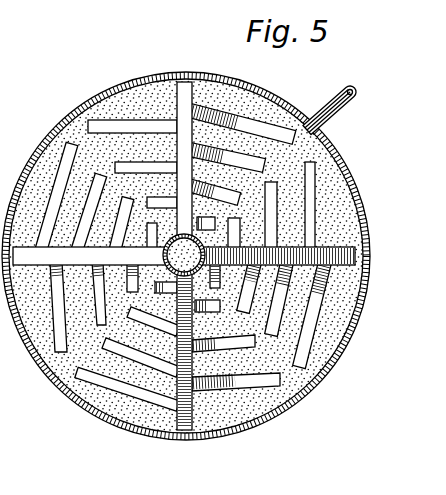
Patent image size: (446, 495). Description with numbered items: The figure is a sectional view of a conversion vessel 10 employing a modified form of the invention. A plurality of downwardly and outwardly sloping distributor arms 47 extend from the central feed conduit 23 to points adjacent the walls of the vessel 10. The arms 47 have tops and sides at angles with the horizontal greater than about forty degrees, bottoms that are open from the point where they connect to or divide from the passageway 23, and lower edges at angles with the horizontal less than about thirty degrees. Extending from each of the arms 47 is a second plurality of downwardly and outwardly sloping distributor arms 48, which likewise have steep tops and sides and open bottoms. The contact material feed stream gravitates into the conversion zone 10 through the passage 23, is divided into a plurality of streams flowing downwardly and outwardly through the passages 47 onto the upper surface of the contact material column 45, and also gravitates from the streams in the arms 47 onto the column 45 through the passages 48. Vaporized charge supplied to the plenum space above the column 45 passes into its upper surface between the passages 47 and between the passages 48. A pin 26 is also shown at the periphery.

The vessel 10 is at (320, 380).
The central feed conduit 23 is at (197, 230).
The pin 26 is at (333, 84).
The contact material column 45 is at (258, 416).
The distributor arms 47 is at (177, 88).
The second distributor arms 48 is at (337, 133).